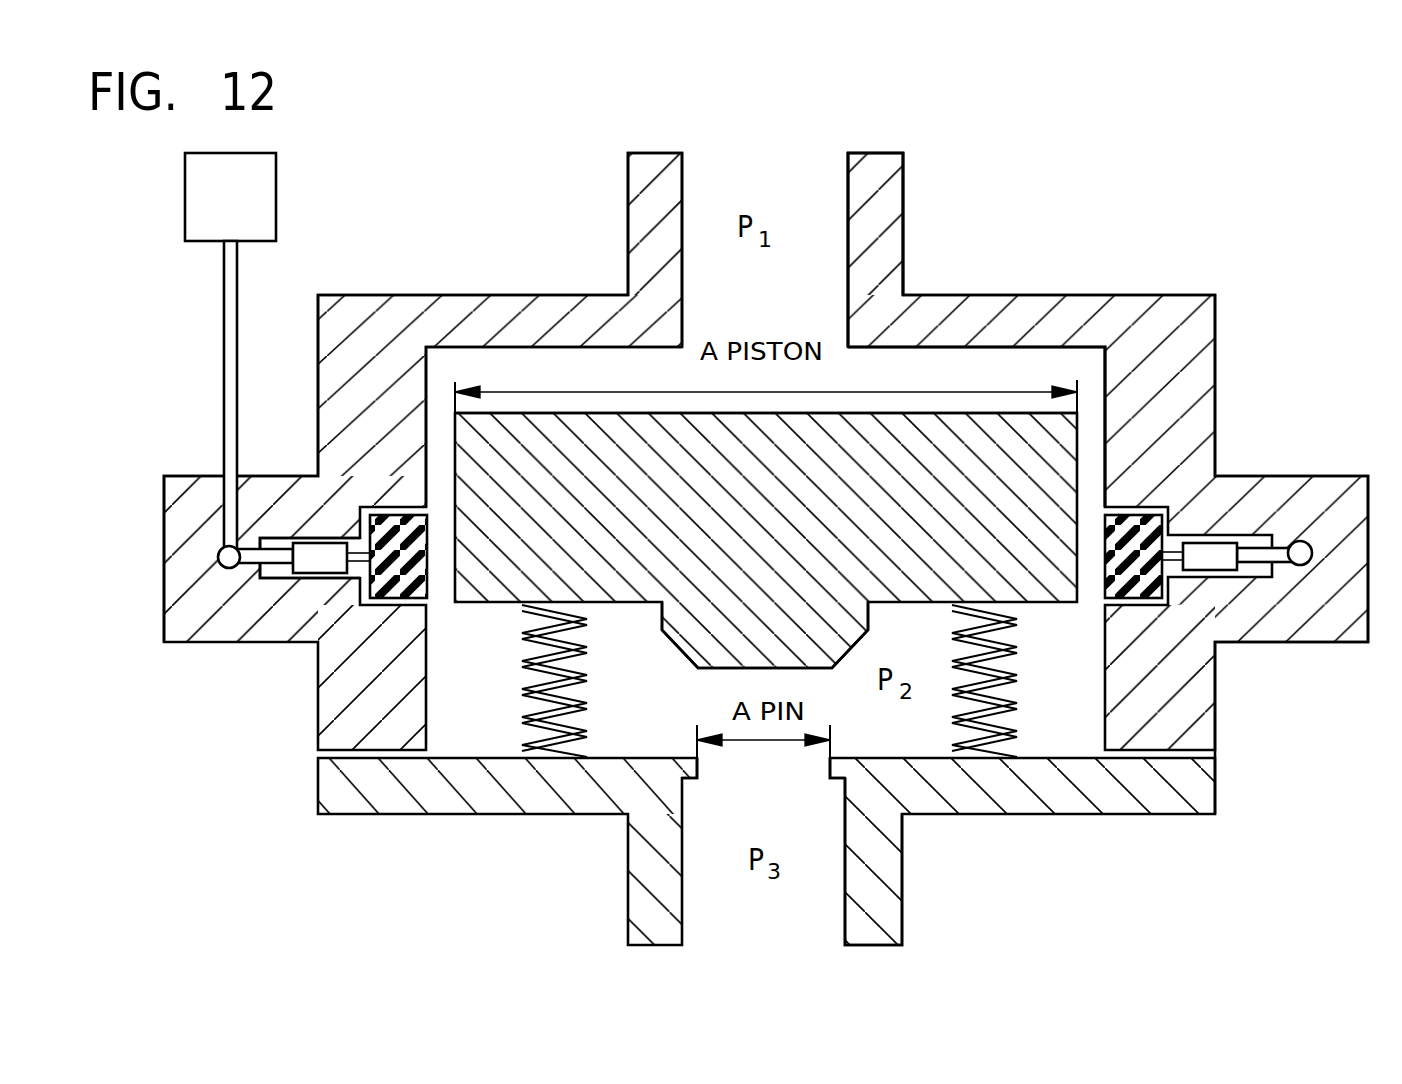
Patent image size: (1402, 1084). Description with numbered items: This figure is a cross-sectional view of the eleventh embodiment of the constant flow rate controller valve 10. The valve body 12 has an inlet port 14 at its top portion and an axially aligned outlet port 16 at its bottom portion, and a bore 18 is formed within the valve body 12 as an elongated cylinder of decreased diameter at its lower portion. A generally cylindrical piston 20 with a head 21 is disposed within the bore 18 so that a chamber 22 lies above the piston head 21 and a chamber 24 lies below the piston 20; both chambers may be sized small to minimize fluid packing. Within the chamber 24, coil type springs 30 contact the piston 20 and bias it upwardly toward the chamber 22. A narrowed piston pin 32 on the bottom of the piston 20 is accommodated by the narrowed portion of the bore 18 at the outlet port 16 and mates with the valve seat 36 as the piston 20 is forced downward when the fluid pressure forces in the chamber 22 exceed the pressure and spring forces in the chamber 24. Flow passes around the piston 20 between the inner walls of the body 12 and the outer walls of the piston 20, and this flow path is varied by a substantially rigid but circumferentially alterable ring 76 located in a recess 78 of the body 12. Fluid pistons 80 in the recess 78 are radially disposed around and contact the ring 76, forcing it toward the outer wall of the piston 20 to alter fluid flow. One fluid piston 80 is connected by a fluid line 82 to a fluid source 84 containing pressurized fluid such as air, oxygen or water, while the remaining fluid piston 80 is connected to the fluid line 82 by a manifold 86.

The constant flow rate controller valve 10 is at (1006, 206).
The valve body 12 is at (930, 294).
The inlet port 14 is at (825, 192).
The outlet port 16 is at (822, 925).
The bore 18 is at (1095, 462).
The piston 20 is at (1047, 448).
The head 21 is at (968, 411).
The chamber 22 is at (1062, 355).
The chamber 24 is at (1077, 743).
The springs 30 is at (530, 667).
The piston pin 32 is at (682, 652).
The valve seat 36 is at (830, 780).
The circumferentially alterable ring 76 is at (427, 595).
The recess 78 is at (273, 573).
The fluid pistons 80 is at (313, 553).
The fluid line 82 is at (232, 525).
The fluid source 84 is at (205, 242).
The manifold 86 is at (1300, 556).